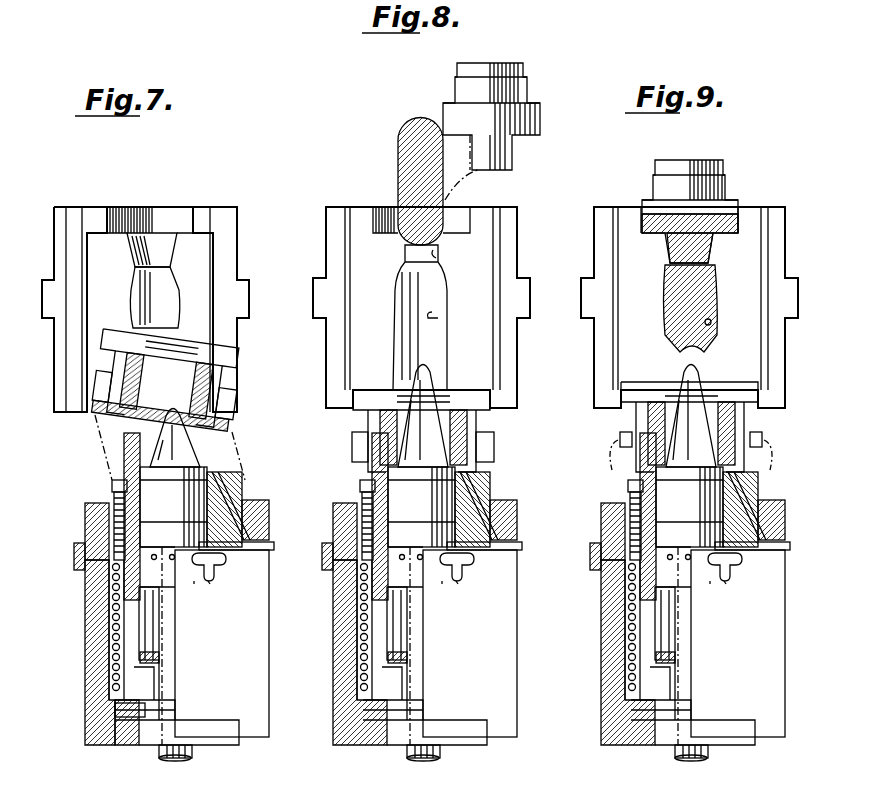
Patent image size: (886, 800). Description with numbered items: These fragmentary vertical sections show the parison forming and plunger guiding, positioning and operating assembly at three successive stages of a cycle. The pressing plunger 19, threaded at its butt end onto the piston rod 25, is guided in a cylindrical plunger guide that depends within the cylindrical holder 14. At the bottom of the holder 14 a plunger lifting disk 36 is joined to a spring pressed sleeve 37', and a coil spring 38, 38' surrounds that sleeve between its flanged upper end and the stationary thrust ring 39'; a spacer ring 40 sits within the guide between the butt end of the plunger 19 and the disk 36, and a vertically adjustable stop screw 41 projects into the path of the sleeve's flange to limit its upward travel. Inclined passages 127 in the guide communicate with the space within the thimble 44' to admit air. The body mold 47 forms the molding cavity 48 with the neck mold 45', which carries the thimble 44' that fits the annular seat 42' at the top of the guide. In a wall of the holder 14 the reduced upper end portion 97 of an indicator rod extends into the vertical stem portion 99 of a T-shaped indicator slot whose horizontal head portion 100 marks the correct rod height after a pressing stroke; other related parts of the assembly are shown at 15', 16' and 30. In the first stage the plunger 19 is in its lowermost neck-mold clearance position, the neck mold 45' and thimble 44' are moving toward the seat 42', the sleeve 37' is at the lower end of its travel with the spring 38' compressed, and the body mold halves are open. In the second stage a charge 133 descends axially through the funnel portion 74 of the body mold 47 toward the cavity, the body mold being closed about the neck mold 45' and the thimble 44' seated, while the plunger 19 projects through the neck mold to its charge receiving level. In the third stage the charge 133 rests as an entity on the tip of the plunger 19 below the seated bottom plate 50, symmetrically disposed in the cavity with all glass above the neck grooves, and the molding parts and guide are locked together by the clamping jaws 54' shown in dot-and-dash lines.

In FIG. 7, the cylindrical holder 14 is at (85, 644).
In FIG. 8, the cylindrical holder 14 is at (347, 730).
In FIG. 9, the cylindrical holder 14 is at (671, 656).
In FIG. 7, the sleeve 15' is at (96, 521).
In FIG. 8, the sleeve 15' is at (344, 537).
In FIG. 9, the sleeve 15' is at (616, 523).
In FIG. 7, the upper body portion 16' is at (84, 545).
In FIG. 8, the upper body portion 16' is at (332, 545).
In FIG. 9, the upper body portion 16' is at (604, 545).
In FIG. 7, the pressing plunger 19 is at (180, 428).
In FIG. 8, the pressing plunger 19 is at (430, 385).
In FIG. 9, the pressing plunger 19 is at (705, 447).
In FIG. 7, the piston rod 25 is at (194, 760).
In FIG. 8, the piston rod 25 is at (440, 752).
In FIG. 9, the piston rod 25 is at (715, 758).
In FIG. 7, the base plate 30 is at (159, 731).
In FIG. 7, the plunger lifting disk 36 is at (174, 677).
In FIG. 8, the plunger lifting disk 36 is at (407, 657).
In FIG. 9, the plunger lifting disk 36 is at (687, 663).
In FIG. 7, the spring pressed sleeve 37' is at (88, 630).
In FIG. 8, the spring pressed sleeve 37' is at (336, 630).
In FIG. 9, the spring pressed sleeve 37' is at (608, 630).
In FIG. 9, the coil spring 38 is at (606, 627).
In FIG. 7, the spring 38' is at (86, 627).
In FIG. 8, the spring 38' is at (334, 627).
In FIG. 7, the stationary thrust ring 39' is at (102, 708).
In FIG. 7, the spacer ring 40 is at (174, 623).
In FIG. 8, the spacer ring 40 is at (398, 612).
In FIG. 9, the spacer ring 40 is at (689, 623).
In FIG. 7, the vertically adjustable stop screw 41 is at (98, 517).
In FIG. 8, the vertically adjustable stop screw 41 is at (362, 494).
In FIG. 9, the vertically adjustable stop screw 41 is at (611, 519).
In FIG. 7, the annular seat 42' is at (242, 498).
In FIG. 8, the annular seat 42' is at (493, 504).
In FIG. 7, the thimble 44' is at (182, 398).
In FIG. 8, the thimble 44' is at (442, 447).
In FIG. 7, the neck mold 45' is at (183, 380).
In FIG. 8, the neck mold 45' is at (450, 425).
In FIG. 7, the body mold 47 is at (202, 245).
In FIG. 8, the body mold 47 is at (478, 278).
In FIG. 9, the body mold 47 is at (748, 272).
In FIG. 8, the molding cavity 48 is at (438, 318).
In FIG. 9, the molding cavity 48 is at (711, 322).
In FIG. 8, the bottom plate 50 is at (520, 95).
In FIG. 9, the bottom plate 50 is at (700, 245).
In FIG. 9, the clamping jaws 54' is at (692, 446).
In FIG. 8, the funnel portion 74 is at (436, 256).
In FIG. 7, the reduced upper end portion of indicator rod 97 is at (225, 595).
In FIG. 8, the reduced upper end portion of indicator rod 97 is at (458, 584).
In FIG. 9, the reduced upper end portion of indicator rod 97 is at (741, 595).
In FIG. 7, the vertical stem portion of indicator slot 99 is at (224, 567).
In FIG. 8, the vertical stem portion of indicator slot 99 is at (474, 565).
In FIG. 9, the vertical stem portion of indicator slot 99 is at (740, 567).
In FIG. 7, the horizontal head portion of indicator slot 100 is at (191, 601).
In FIG. 8, the horizontal head portion of indicator slot 100 is at (442, 584).
In FIG. 9, the horizontal head portion of indicator slot 100 is at (707, 601).
In FIG. 7, the inclined passages 127 is at (268, 511).
In FIG. 8, the inclined passages 127 is at (505, 500).
In FIG. 9, the inclined passages 127 is at (792, 510).
In FIG. 8, the charge 133 is at (405, 152).
In FIG. 9, the charge 133 is at (717, 298).